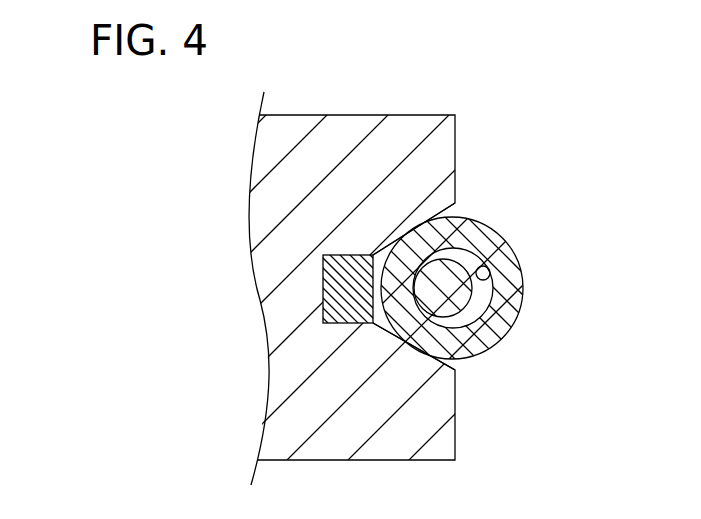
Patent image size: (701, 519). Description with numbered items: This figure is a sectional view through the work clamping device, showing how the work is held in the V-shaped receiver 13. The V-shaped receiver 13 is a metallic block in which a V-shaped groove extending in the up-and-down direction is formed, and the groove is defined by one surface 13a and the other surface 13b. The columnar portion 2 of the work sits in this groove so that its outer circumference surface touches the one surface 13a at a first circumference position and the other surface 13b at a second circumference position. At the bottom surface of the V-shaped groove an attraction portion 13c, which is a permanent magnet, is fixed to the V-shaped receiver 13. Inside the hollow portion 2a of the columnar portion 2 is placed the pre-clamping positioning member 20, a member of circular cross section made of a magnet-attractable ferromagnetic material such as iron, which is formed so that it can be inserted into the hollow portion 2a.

The V-shaped receiver 13 is at (374, 115).
The one surface of the V-shaped groove 13a is at (453, 216).
The other surface of the V-shaped groove 13b is at (461, 363).
The attraction portion (magnet) 13c is at (323, 292).
The columnar portion 2 is at (511, 240).
The hollow portion 2a is at (491, 283).
The pre-clamping positioning member 20 is at (477, 279).